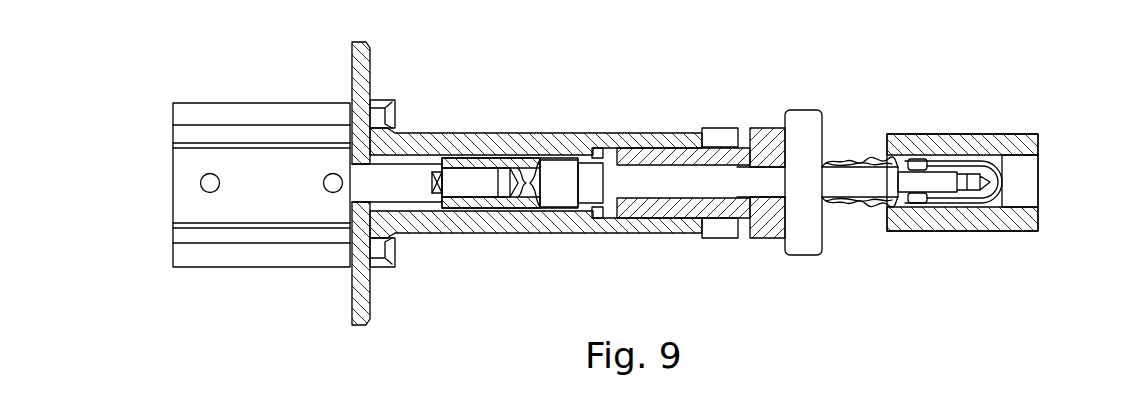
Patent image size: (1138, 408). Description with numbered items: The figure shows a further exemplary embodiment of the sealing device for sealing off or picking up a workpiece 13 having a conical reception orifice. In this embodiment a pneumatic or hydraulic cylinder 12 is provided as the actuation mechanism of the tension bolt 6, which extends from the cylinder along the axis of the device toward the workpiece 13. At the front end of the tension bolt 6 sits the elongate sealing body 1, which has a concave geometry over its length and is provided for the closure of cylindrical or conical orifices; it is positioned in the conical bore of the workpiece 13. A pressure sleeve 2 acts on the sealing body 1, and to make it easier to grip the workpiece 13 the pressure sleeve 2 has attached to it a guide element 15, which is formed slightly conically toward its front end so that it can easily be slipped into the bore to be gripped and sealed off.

The sealing body 1 is at (854, 152).
The pressure sleeve 2 is at (915, 207).
The tension bolt 6 is at (868, 180).
The pneumatic or hydraulic cylinder 12 is at (238, 113).
The workpiece 13 is at (930, 128).
The guide element 15 is at (962, 207).